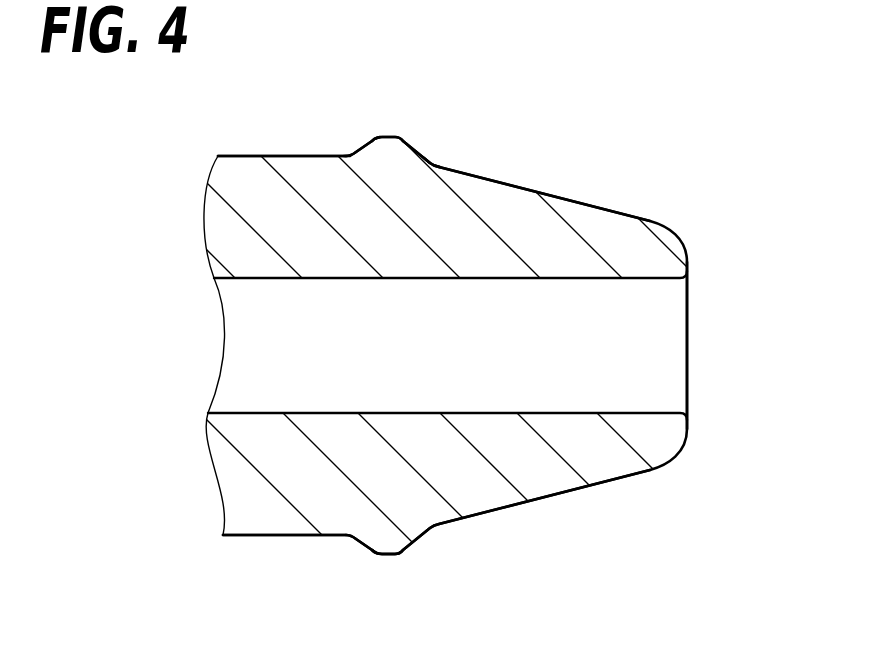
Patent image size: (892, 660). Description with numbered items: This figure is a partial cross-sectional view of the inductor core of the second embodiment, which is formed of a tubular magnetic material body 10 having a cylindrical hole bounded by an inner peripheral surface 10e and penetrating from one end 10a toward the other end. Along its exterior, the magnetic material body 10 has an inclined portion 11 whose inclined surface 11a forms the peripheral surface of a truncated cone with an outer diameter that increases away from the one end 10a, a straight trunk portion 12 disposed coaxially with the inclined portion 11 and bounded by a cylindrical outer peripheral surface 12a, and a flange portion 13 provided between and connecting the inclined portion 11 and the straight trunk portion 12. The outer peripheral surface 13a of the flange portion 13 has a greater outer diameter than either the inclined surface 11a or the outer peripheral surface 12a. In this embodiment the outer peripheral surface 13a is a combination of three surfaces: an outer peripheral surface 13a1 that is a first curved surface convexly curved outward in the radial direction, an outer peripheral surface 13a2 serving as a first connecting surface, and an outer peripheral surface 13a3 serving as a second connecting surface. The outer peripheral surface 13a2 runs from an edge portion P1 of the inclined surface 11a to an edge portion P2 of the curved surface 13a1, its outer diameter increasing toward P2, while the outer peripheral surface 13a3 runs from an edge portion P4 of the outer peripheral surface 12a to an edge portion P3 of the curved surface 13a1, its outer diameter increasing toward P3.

The magnetic material body 10 is at (652, 257).
The one end 10a is at (687, 328).
The inner peripheral surface 10e is at (237, 279).
The inclined portion 11 is at (497, 488).
The inclined surface 11a is at (569, 200).
The straight trunk portion 12 is at (309, 516).
The outer peripheral surface 12a is at (258, 155).
The flange portion 13 is at (390, 545).
The outer peripheral surface 13a is at (407, 552).
The outer peripheral surface 13a1 is at (397, 136).
The outer peripheral surface 13a2 is at (437, 165).
The outer peripheral surface 13a3 is at (366, 144).
The edge portion P1 is at (437, 166).
The edge portion P2 is at (428, 158).
The edge portion P3 is at (377, 136).
The edge portion P4 is at (350, 157).